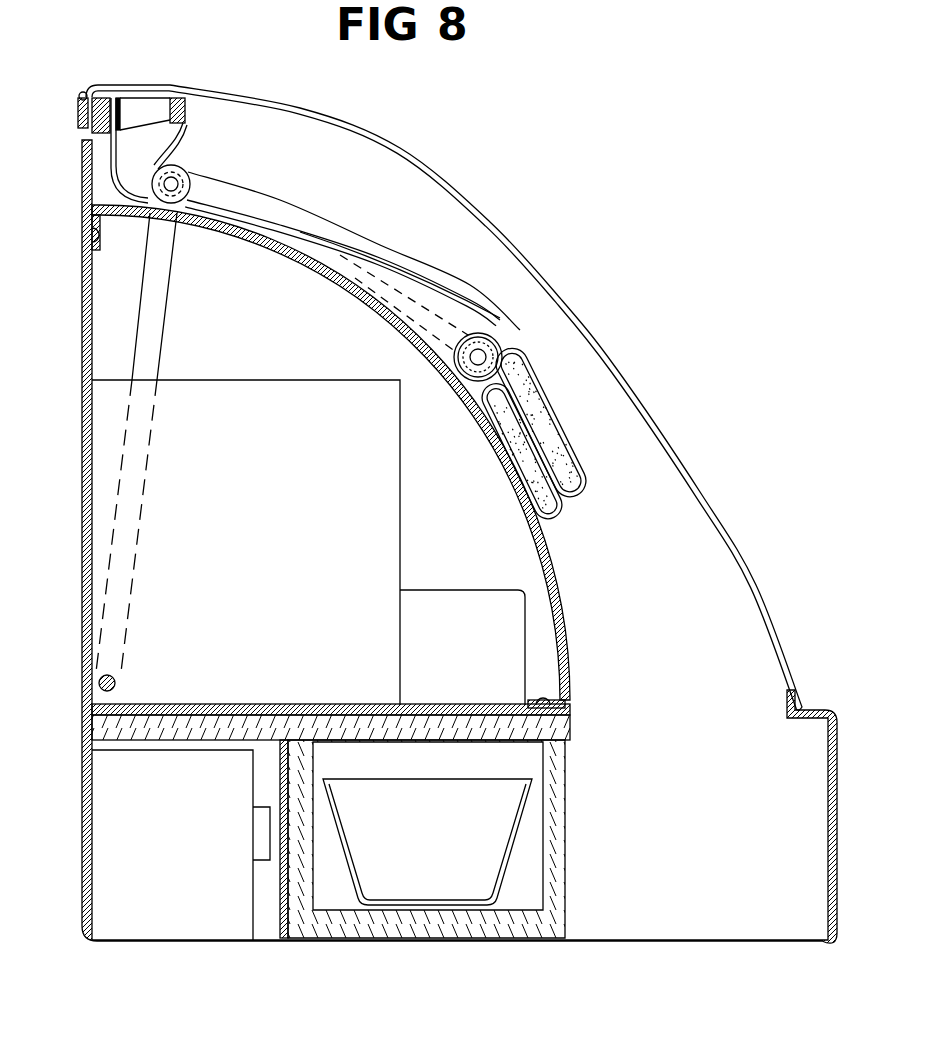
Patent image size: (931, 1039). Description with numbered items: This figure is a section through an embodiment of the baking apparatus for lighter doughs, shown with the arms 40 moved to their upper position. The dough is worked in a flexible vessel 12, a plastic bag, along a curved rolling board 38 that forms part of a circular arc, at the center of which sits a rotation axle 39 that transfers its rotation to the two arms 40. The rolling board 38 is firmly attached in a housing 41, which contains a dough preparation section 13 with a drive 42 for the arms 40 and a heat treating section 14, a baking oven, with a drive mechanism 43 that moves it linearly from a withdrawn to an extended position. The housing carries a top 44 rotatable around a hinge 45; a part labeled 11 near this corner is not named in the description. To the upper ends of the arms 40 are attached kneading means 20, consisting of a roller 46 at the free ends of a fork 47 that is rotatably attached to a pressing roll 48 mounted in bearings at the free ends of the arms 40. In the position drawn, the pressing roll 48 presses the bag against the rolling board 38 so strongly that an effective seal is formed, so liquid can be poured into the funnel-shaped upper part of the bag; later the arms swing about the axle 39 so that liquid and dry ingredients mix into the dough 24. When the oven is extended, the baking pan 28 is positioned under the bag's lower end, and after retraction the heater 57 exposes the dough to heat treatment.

The frame top bar 11 is at (125, 105).
The flexible vessel 12 is at (110, 165).
The dough preparation section 13 is at (385, 248).
The heat treating section 14 is at (335, 887).
The kneading means 20 is at (332, 218).
The dough 24 is at (572, 456).
The baking pan 28 is at (500, 887).
The rolling board 38 is at (569, 600).
The rotation axle 39 is at (99, 685).
The arms 40 is at (150, 310).
The housing 41 is at (84, 578).
The drive 42 is at (378, 592).
The drive mechanism 43 is at (175, 913).
The top 44 is at (492, 230).
The hinge 45 is at (84, 93).
The roller 46 is at (495, 343).
The fork 47 is at (260, 208).
The pressing roll 48 is at (178, 176).
The heater 57 is at (471, 664).